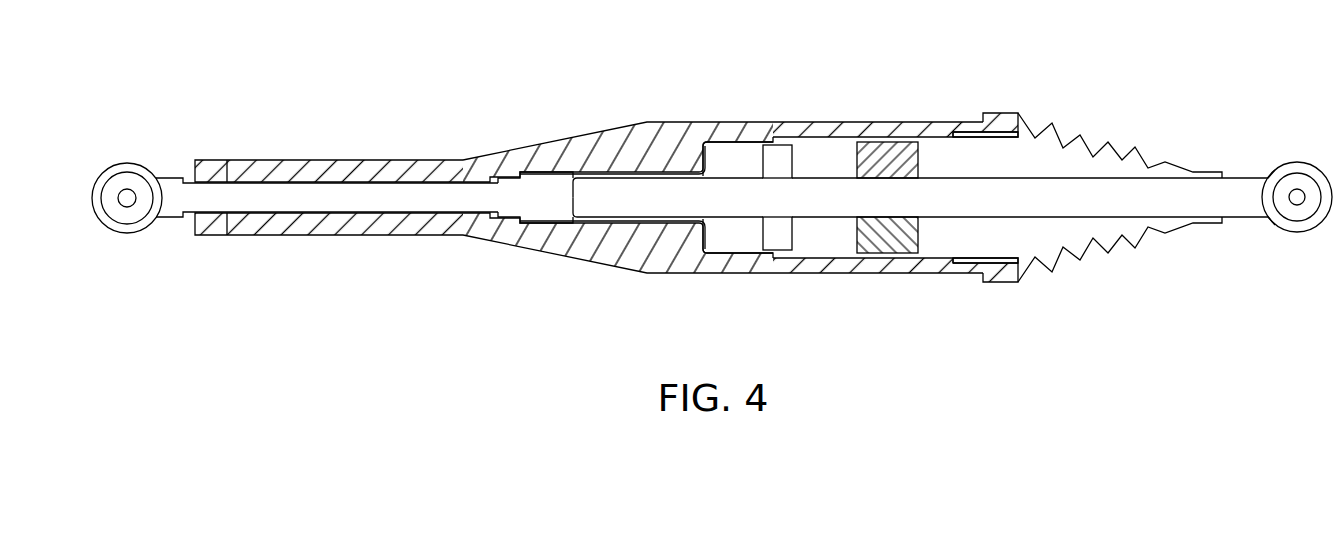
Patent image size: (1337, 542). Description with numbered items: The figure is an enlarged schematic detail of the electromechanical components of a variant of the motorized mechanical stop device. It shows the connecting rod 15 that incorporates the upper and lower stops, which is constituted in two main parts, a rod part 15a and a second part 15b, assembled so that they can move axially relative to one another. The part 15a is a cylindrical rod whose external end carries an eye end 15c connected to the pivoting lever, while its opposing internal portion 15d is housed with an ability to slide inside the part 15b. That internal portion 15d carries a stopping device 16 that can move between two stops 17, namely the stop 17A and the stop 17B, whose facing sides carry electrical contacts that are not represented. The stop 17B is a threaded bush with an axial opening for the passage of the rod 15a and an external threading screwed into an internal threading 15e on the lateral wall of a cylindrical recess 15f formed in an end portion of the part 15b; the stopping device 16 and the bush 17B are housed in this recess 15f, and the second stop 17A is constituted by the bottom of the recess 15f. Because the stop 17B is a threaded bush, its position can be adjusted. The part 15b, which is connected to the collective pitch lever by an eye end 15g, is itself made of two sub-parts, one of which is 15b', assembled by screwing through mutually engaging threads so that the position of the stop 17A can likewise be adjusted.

The connecting rod 15 is at (667, 68).
The rod part 15a is at (1013, 185).
The connecting rod part 15b is at (723, 221).
The first sub-part of part 15b 15b' is at (329, 179).
The eye end 15c is at (1296, 200).
The internal portion 15d is at (697, 205).
The internal threading 15e is at (954, 258).
The cylindrical recess 15f is at (733, 147).
The eye end 15g is at (128, 180).
The stopping device 16 is at (786, 150).
The bushing 17 is at (716, 246).
The stop 17A is at (688, 155).
The stop 17B is at (945, 131).